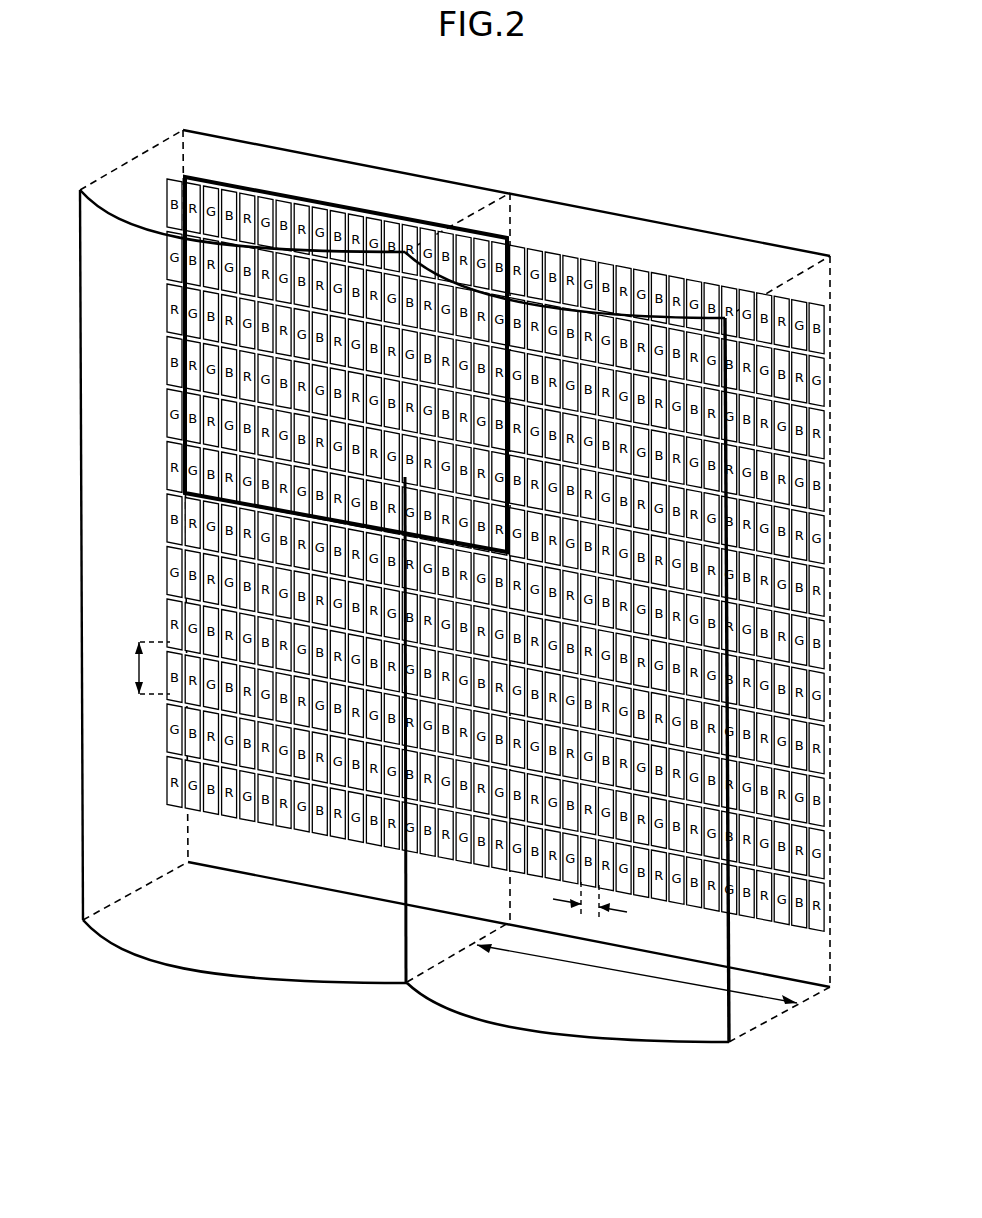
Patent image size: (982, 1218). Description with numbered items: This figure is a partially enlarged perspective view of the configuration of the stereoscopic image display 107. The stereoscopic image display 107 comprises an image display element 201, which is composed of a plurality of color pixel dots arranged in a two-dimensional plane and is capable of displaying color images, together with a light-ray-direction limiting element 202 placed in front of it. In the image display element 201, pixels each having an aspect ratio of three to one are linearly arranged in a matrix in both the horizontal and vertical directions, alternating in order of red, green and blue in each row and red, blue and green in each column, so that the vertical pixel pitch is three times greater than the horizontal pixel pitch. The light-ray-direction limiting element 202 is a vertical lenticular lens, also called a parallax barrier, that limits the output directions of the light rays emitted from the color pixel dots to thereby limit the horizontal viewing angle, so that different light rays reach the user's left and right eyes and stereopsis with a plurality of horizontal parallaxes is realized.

The stereoscopic image display 107 is at (694, 138).
The image display element 201 is at (666, 268).
The light-ray-direction limiting element 202 is at (764, 1022).